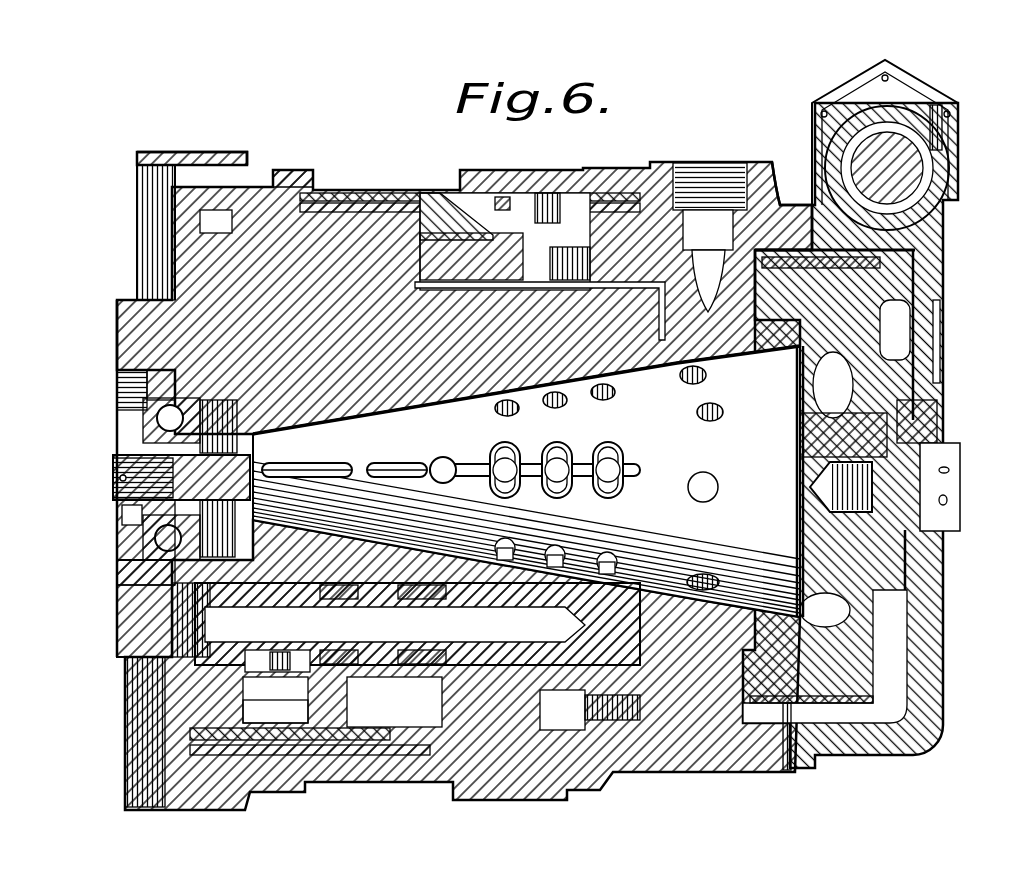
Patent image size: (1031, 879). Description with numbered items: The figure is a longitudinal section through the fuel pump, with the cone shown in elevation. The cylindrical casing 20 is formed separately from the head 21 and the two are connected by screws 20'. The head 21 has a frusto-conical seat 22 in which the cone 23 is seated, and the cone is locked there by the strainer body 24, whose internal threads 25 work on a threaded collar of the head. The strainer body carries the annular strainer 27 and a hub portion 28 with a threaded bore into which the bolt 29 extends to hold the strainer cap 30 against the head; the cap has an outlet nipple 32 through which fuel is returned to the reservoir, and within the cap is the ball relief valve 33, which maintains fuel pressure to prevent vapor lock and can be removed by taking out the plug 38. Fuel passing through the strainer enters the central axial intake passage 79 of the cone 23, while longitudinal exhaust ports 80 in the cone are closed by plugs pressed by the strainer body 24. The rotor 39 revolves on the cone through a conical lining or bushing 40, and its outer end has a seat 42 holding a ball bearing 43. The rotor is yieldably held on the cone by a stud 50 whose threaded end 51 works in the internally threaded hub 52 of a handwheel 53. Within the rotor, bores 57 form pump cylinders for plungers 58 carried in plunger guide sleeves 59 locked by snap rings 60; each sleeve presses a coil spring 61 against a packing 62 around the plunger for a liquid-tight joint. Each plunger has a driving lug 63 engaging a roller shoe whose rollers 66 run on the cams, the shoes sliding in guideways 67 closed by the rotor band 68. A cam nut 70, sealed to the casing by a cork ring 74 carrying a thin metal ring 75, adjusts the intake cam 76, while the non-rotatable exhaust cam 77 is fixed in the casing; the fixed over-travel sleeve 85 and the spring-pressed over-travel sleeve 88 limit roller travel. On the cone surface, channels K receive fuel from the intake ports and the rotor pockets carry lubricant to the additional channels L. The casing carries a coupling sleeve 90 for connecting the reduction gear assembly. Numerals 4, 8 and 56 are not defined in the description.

The bracket 4 is at (283, 187).
The housing block 8 is at (933, 253).
The cylindrical casing 20 is at (464, 479).
The screws 20' is at (607, 747).
The head 21 is at (778, 205).
The frusto-conical seat 22 is at (758, 355).
The cone 23 is at (809, 481).
The strainer body 24 is at (870, 342).
The internal threads of strainer body 25 is at (890, 250).
The annular strainer 27 is at (912, 290).
The hub portion 28 is at (940, 426).
The bolt 29 is at (962, 452).
The strainer cap 30 is at (905, 592).
The outlet nipple 32 is at (937, 125).
The relief valve 33 is at (862, 98).
The plug 38 is at (705, 760).
The rotor 39 is at (205, 315).
The lining or bushing 40 is at (388, 460).
The seat 42 is at (150, 357).
The ball bearing 43 is at (140, 392).
The stud 50 is at (150, 487).
The external threads of stud 51 is at (130, 507).
The internally threaded hub 52 is at (145, 455).
The handwheel 53 is at (150, 522).
The pin 56 is at (120, 472).
The bores 57 is at (478, 575).
The plungers 58 is at (417, 624).
The plunger guide sleeves 59 is at (150, 567).
The snap rings 60 is at (150, 583).
The coil spring 61 is at (345, 600).
The packing 62 is at (417, 600).
The driving lug 63 is at (272, 658).
The roller 66 is at (342, 702).
The guideways 67 is at (275, 710).
The rotor band 68 is at (318, 210).
The cam nut 70 is at (545, 195).
The cork ring 74 is at (503, 200).
The thin metal ring 75 is at (470, 195).
The intake cam 76 is at (505, 241).
The exhaust cam 77 is at (190, 247).
The central axial intake passage 79 is at (560, 455).
The exhaust ports 80 is at (608, 398).
The fixed over-travel sleeve 85 is at (525, 290).
The over-travel sleeve 88 is at (360, 200).
The coupling sleeve 90 is at (220, 170).
The channels K is at (397, 453).
The additional channels L is at (307, 453).